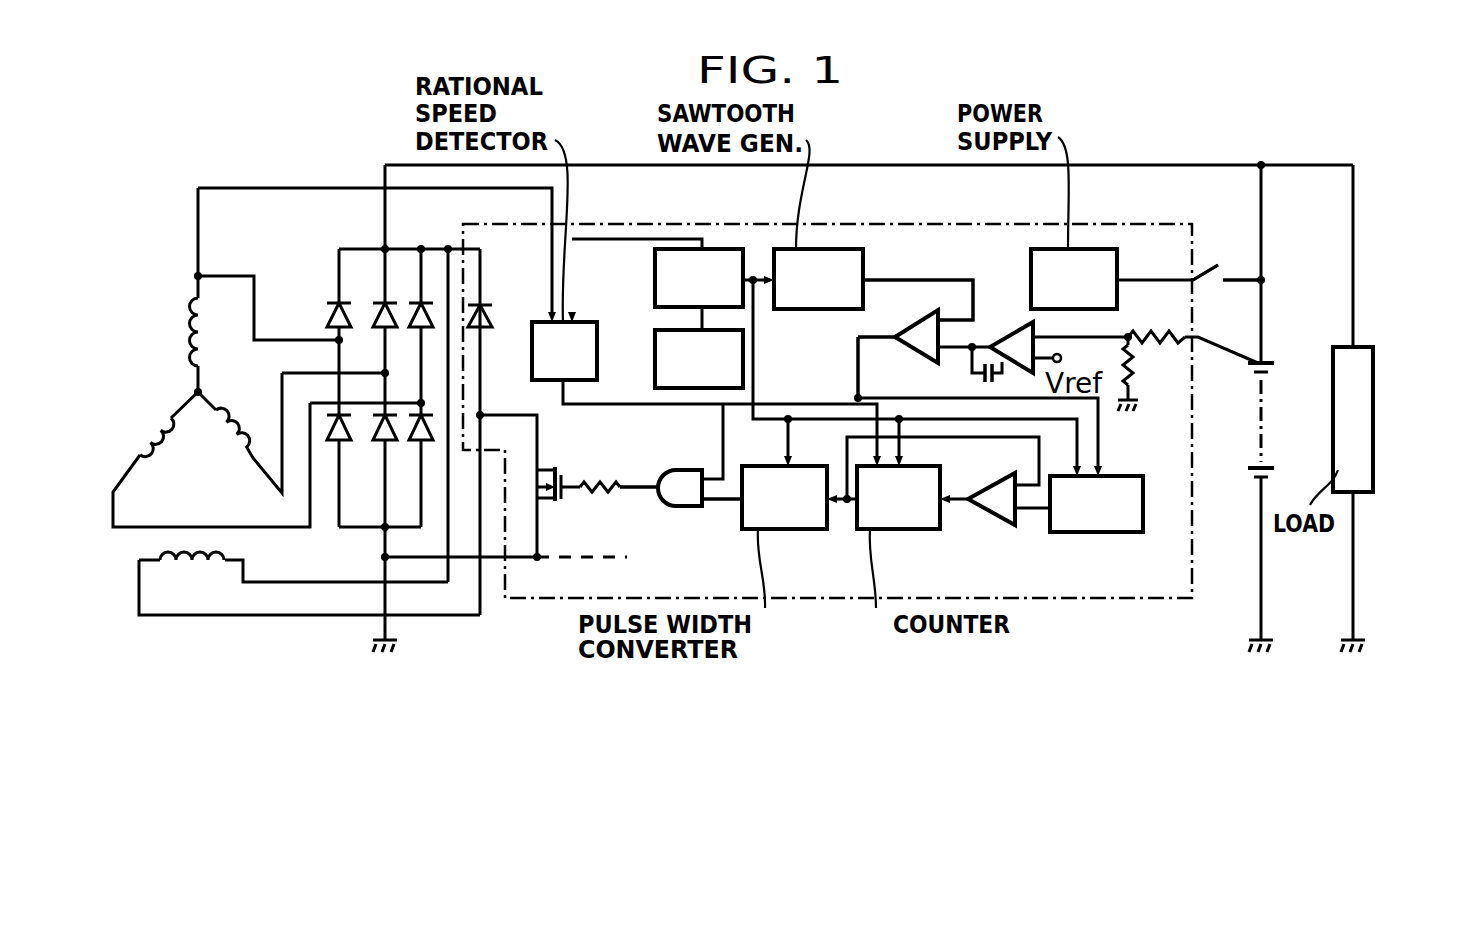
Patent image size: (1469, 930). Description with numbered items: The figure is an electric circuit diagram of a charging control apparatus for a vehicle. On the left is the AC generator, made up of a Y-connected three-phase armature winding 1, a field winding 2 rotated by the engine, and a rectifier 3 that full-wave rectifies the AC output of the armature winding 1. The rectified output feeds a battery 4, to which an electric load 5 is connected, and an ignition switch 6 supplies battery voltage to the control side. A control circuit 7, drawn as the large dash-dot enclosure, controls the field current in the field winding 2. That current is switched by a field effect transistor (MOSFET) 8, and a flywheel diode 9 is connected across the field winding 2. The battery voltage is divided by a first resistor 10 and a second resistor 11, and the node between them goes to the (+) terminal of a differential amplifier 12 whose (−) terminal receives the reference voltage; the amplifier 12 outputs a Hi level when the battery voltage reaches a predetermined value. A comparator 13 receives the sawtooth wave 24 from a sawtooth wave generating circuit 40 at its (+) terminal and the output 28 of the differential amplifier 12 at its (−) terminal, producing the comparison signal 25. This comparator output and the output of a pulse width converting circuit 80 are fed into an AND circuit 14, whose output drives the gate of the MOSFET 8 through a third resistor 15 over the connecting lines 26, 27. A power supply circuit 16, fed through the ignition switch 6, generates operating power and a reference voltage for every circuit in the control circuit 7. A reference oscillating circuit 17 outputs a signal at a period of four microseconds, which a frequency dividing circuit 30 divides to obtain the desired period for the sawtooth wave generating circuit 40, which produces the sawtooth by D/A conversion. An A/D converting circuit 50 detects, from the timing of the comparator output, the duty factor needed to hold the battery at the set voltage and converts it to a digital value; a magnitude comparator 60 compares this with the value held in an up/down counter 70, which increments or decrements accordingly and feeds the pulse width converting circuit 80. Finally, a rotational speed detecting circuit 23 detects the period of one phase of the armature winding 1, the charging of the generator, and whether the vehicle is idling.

The three-phase armature winding 1 is at (208, 266).
The field winding 2 is at (230, 548).
The rectifier 3 is at (408, 243).
The battery 4 is at (1278, 365).
The electric load 5 is at (1375, 355).
The ignition switch 6 is at (1228, 264).
The control circuit 7 is at (818, 215).
The field effect transistor (MOSFET) 8 is at (557, 470).
The flywheel diode 9 is at (490, 293).
The first resistor 10 is at (1148, 330).
The second resistor 11 is at (1140, 380).
The differential amplifier 12 is at (1002, 333).
The comparator 13 is at (918, 314).
The AND circuit 14 is at (667, 507).
The third resistor 15 is at (598, 494).
The power supply circuit 16 is at (1117, 262).
The reference oscillating circuit 17 is at (655, 378).
The rotational speed detecting circuit 23 is at (532, 352).
The sawtooth wave 24 is at (950, 272).
The comparison signal 25 is at (857, 353).
The signal line 26 is at (718, 507).
The signal line 27 is at (645, 487).
The output of the differential amplifier 28 is at (964, 362).
The frequency dividing circuit 30 is at (655, 276).
The sawtooth wave generating circuit 40 is at (863, 262).
The A/D converting circuit 50 is at (1080, 532).
The magnitude comparator 60 is at (998, 507).
The up/down counter 70 is at (883, 529).
The pulse width converting circuit 80 is at (783, 529).